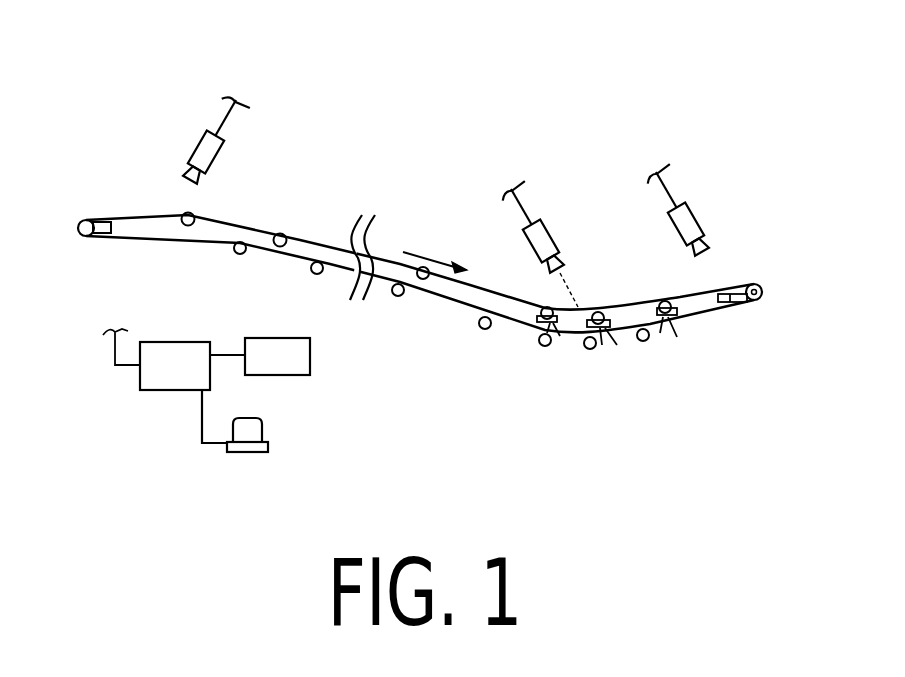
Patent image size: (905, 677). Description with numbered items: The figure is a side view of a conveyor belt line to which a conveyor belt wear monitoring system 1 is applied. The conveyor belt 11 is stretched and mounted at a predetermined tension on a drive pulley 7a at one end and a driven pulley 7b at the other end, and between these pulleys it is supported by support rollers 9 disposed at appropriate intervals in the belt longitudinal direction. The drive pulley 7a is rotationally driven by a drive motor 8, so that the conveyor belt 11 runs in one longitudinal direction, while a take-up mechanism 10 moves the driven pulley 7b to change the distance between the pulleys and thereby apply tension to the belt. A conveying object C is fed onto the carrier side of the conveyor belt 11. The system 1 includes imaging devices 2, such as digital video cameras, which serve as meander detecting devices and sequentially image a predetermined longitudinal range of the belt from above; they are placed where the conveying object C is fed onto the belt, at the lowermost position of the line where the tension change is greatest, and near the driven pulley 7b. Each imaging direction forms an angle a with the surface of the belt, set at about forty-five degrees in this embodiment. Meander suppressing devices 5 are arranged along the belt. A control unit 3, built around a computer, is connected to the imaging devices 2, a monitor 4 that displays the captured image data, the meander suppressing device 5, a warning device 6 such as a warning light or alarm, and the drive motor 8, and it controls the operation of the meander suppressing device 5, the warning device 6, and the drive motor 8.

The conveyor belt wear monitoring system 1 is at (562, 100).
The imaging device 2 is at (202, 147).
The control unit 3 is at (170, 378).
The monitor 4 is at (300, 363).
The meander suppressing device 5 is at (556, 332).
The warning device 6 is at (253, 428).
The drive pulley 7a is at (83, 220).
The driven pulley 7b is at (762, 283).
The drive motor 8 is at (103, 234).
The support roller 9 is at (236, 254).
The take-up mechanism 10 is at (732, 306).
The conveyor belt 11 is at (313, 240).
The conveying object C is at (138, 190).
The angle a is at (563, 302).